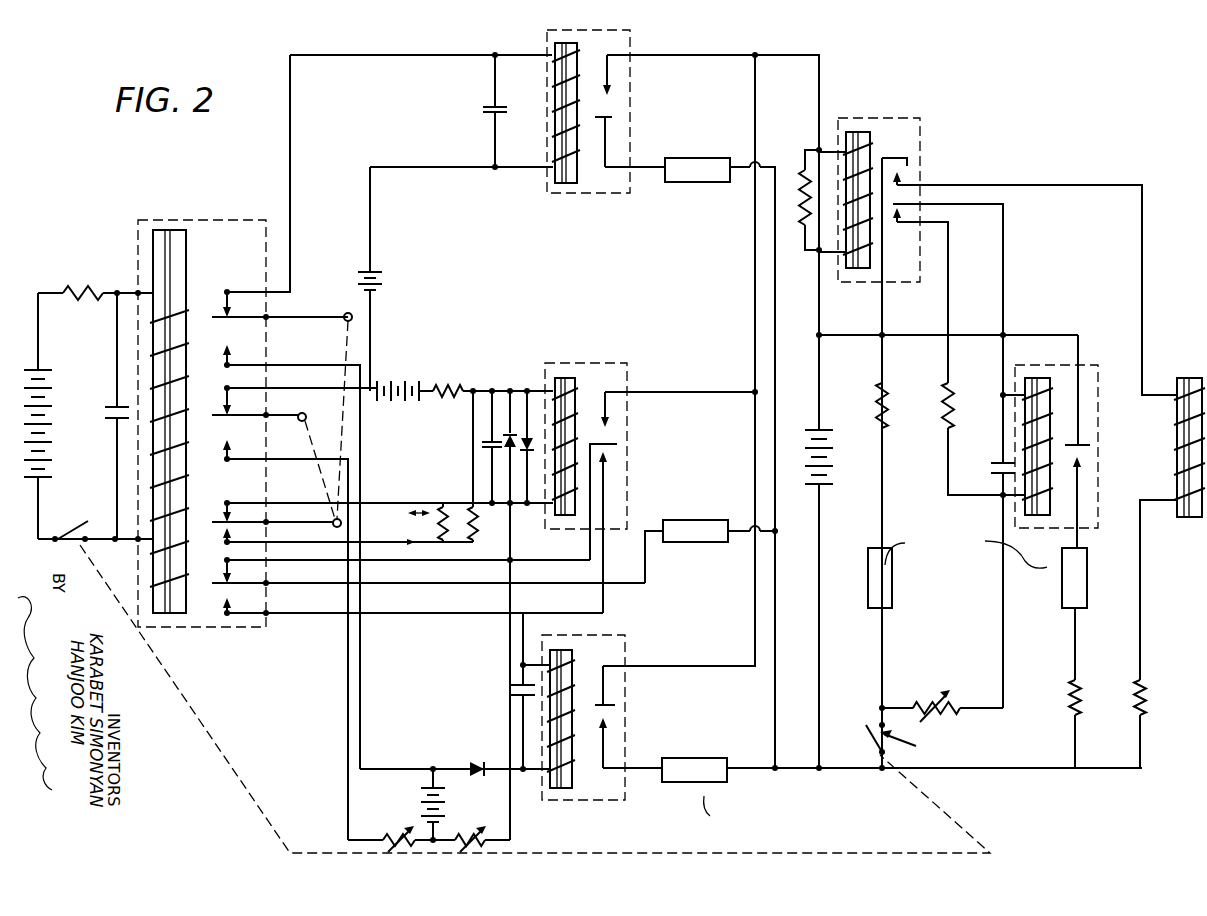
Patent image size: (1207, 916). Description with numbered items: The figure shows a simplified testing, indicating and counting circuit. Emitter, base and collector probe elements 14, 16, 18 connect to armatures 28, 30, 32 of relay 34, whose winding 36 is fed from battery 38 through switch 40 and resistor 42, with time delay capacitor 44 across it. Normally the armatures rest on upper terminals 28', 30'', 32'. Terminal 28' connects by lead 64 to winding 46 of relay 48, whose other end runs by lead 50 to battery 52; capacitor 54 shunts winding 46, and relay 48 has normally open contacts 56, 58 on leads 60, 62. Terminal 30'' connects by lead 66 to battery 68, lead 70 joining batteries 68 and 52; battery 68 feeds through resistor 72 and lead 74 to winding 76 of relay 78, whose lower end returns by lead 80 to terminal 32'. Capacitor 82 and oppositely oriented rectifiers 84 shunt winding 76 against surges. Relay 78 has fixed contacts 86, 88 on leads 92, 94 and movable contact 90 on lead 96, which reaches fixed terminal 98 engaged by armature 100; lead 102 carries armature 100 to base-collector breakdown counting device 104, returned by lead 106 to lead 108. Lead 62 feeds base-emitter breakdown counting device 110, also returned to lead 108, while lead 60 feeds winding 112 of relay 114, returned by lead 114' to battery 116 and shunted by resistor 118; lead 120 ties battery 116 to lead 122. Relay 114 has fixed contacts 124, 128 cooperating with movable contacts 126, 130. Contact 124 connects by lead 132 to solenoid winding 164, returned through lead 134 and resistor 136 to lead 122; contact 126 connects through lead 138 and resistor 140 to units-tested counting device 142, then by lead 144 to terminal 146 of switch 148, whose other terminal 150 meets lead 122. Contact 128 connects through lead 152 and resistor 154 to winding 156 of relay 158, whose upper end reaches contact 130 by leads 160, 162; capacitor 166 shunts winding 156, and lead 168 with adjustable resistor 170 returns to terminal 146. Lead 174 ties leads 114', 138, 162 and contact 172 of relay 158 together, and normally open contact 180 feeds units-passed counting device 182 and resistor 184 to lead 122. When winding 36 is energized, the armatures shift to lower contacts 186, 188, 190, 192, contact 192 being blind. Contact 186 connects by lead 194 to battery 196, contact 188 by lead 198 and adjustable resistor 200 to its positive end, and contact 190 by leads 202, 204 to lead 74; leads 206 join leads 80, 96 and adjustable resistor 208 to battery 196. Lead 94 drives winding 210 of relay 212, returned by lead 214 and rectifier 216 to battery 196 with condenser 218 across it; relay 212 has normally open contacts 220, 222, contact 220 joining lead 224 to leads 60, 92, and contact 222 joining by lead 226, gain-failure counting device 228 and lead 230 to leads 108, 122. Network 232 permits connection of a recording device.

The emitter probe element 14 is at (344, 312).
The base probe element 16 is at (300, 414).
The collector probe element 18 is at (334, 526).
The armature 28 is at (280, 327).
The upper terminal 28' is at (256, 186).
The armature 30 is at (255, 425).
The upper terminal 30'' is at (242, 401).
The armature 32 is at (272, 530).
The upper terminal 32' is at (210, 501).
The relay 34 is at (204, 220).
The winding 36 is at (186, 302).
The battery 38 is at (54, 388).
The switch 40 is at (70, 541).
The resistor 42 is at (83, 291).
The time delay capacitor 44 is at (104, 416).
The winding 46 is at (578, 156).
The relay 48 is at (610, 192).
The lead 50 is at (432, 167).
The battery 52 is at (382, 276).
The capacitor 54 is at (482, 109).
The normally open contact 56 is at (612, 88).
The normally open contact 58 is at (620, 120).
The lead 60 is at (682, 56).
The lead 62 is at (646, 178).
The lead 64 is at (386, 55).
The lead 66 is at (278, 390).
The battery 68 is at (403, 400).
The lead 70 is at (370, 330).
The resistor 72 is at (446, 386).
The lead 74 is at (523, 390).
The winding 76 is at (576, 378).
The relay 78 is at (626, 363).
The lead 80 is at (374, 503).
The capacitor 82 is at (484, 440).
The rectifiers 84 is at (530, 423).
The fixed contact 86 is at (613, 423).
The fixed contact 88 is at (613, 460).
The movable contact 90 is at (590, 440).
The lead 92 is at (674, 392).
The lead 94 is at (604, 556).
The lead 96 is at (547, 561).
The fixed terminal 98 is at (234, 568).
The armature 100 is at (244, 584).
The lead 102 is at (440, 600).
The base-collector breakdown counting device 104 is at (688, 520).
The lead 106 is at (732, 530).
The lead 108 is at (775, 370).
The base-emitter breakdown counting device 110 is at (688, 182).
The winding 112 is at (872, 146).
The relay 114 is at (887, 185).
The lead 114' is at (842, 350).
The battery 116 is at (830, 411).
The resistor 118 is at (800, 232).
The lead 120 is at (819, 609).
The lead 122 is at (795, 772).
The fixed contact 124 is at (904, 177).
The movable contact 126 is at (907, 140).
The fixed contact 128 is at (893, 224).
The movable contact 130 is at (913, 188).
The lead 132 is at (1056, 185).
The lead 134 is at (1135, 588).
The resistor 136 is at (1142, 686).
The lead 138 is at (885, 310).
The resistor 140 is at (886, 412).
The units-tested counting device 142 is at (894, 575).
The lead 144 is at (884, 657).
The terminal 146 is at (880, 710).
The switch 148 is at (915, 742).
The terminal 150 is at (868, 736).
The lead 152 is at (950, 278).
The resistor 154 is at (952, 412).
The winding 156 is at (1046, 516).
The relay 158 is at (1087, 365).
The lead 160 is at (1000, 364).
The lead 162 is at (1004, 266).
The solenoid winding 164 is at (1182, 378).
The time delay capacitor 166 is at (996, 466).
The lead 168 is at (1003, 629).
The adjustable resistor 170 is at (946, 721).
The contact 172 is at (1097, 437).
The lead 174 is at (876, 335).
The normally open contact 180 is at (1083, 468).
The units-passed counting device 182 is at (1088, 572).
The resistor 184 is at (1078, 660).
The lower contact 186 is at (210, 356).
The lower contact 188 is at (232, 448).
The lower contact 190 is at (211, 544).
The lower contact 192 is at (210, 600).
The lead 194 is at (280, 365).
The battery 196 is at (420, 793).
The lead 198 is at (284, 476).
The adjustable resistor 200 is at (380, 826).
The lead 202 is at (350, 532).
The lead 204 is at (470, 460).
The lead 206 is at (486, 638).
The adjustable resistor 208 is at (460, 828).
The winding 210 is at (574, 669).
The relay 212 is at (625, 646).
The lead 214 is at (517, 780).
The rectifier 216 is at (472, 760).
The condenser 218 is at (512, 686).
The normally open contact 220 is at (612, 692).
The normally open contact 222 is at (612, 722).
The lead 224 is at (754, 251).
The lead 226 is at (644, 776).
The gain-failure counting device 228 is at (701, 758).
The lead 230 is at (744, 770).
The network 232 is at (452, 502).